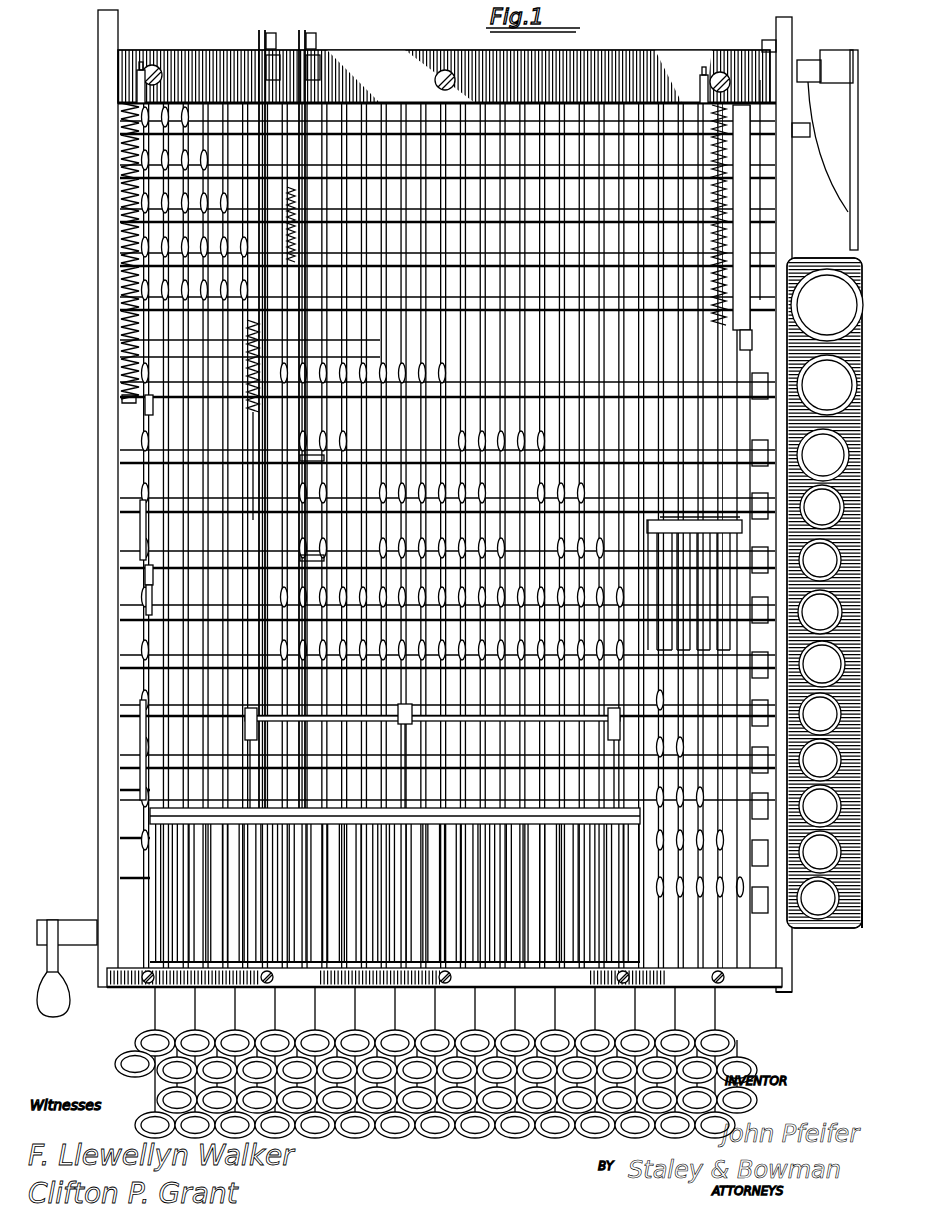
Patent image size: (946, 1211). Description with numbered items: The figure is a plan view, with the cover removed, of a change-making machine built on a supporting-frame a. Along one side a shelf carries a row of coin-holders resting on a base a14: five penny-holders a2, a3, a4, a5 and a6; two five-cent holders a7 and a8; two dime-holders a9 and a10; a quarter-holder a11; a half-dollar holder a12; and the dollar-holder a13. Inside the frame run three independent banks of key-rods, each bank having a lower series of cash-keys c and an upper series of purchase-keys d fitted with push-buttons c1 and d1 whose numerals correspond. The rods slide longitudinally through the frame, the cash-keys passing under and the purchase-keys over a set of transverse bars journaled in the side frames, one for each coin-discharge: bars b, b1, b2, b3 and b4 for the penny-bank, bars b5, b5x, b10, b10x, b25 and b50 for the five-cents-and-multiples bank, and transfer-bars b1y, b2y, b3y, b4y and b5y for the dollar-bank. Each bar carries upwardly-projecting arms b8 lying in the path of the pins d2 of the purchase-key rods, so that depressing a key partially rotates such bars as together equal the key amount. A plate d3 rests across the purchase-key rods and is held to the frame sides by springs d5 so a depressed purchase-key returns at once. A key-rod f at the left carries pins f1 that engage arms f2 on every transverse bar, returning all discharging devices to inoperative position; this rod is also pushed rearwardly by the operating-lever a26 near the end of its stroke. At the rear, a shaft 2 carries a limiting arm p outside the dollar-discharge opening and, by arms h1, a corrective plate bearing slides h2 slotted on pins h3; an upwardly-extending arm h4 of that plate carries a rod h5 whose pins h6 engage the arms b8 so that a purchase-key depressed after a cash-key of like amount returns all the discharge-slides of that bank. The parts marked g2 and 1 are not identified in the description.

The supporting-frame a is at (100, 42).
The coin-holder a2 is at (818, 898).
The coin-holder a3 is at (820, 852).
The coin-holder a4 is at (820, 806).
The coin-holder a5 is at (820, 760).
The coin-holder a6 is at (820, 714).
The coin-holder a7 is at (822, 664).
The coin-holder a8 is at (820, 612).
The coin-holder a9 is at (820, 560).
The coin-holder a10 is at (822, 507).
The coin-holder a11 is at (823, 455).
The coin-holder a12 is at (827, 385).
The dollar-holder a13 is at (827, 305).
The base a14 is at (862, 928).
The operating-lever a26 is at (67, 978).
The transverse bar b is at (125, 888).
The transverse bar b1 is at (125, 848).
The transverse bar b2 is at (125, 800).
The transverse bar b3 is at (125, 760).
The transverse bar b4 is at (125, 710).
The transverse bar b5 is at (125, 660).
The transverse bar b5x is at (125, 605).
The transverse bar b10 is at (125, 555).
The transverse bar b10x is at (125, 500).
The transverse bar b25 is at (125, 450).
The transverse bar b50 is at (125, 380).
The transfer-bar b1y is at (120, 300).
The transfer-bar b2y is at (120, 260).
The transfer-bar b3y is at (120, 212).
The transfer-bar b4y is at (120, 170).
The transfer-bar b5y is at (120, 128).
The upwardly-projecting arm b8 is at (285, 372).
The cash-key c is at (150, 1100).
The push-button c1 is at (390, 1138).
The purchase-key d is at (725, 1050).
The push-button d1 is at (140, 1027).
The pin d2 is at (122, 290).
The plate d3 is at (447, 71).
The spring d5 is at (122, 228).
The key-rod f is at (125, 1052).
The pin f1 is at (146, 598).
The arm f2 is at (140, 525).
The rack bar g2 is at (162, 880).
The arm h1 is at (294, 230).
The slide h2 is at (245, 725).
The pin h3 is at (405, 724).
The upwardly-extending arm h4 is at (308, 44).
The rod h5 is at (266, 38).
The pin h6 is at (293, 400).
The arm p is at (850, 206).
The base 1 is at (770, 962).
The shaft 2 is at (806, 122).